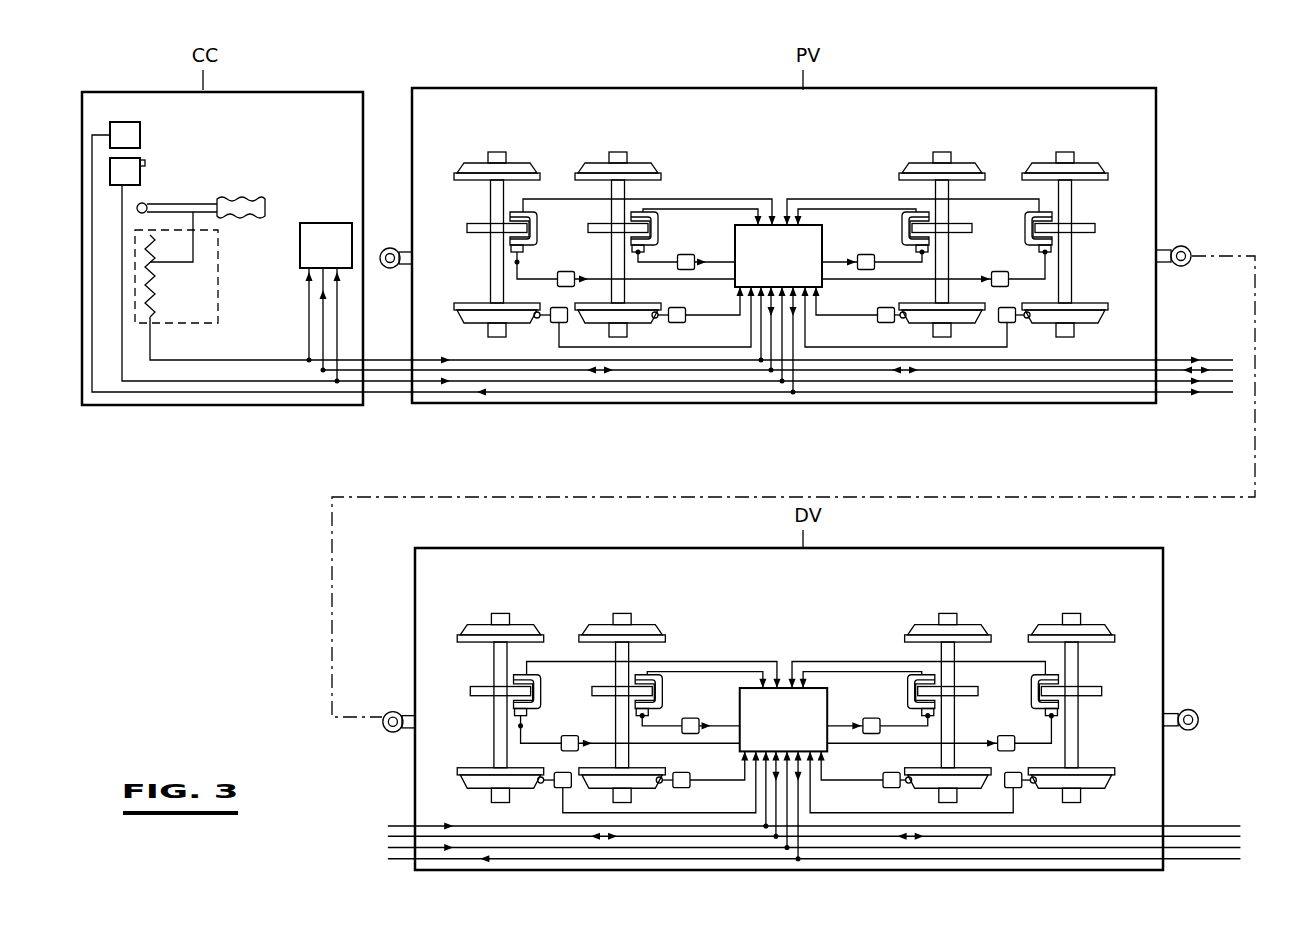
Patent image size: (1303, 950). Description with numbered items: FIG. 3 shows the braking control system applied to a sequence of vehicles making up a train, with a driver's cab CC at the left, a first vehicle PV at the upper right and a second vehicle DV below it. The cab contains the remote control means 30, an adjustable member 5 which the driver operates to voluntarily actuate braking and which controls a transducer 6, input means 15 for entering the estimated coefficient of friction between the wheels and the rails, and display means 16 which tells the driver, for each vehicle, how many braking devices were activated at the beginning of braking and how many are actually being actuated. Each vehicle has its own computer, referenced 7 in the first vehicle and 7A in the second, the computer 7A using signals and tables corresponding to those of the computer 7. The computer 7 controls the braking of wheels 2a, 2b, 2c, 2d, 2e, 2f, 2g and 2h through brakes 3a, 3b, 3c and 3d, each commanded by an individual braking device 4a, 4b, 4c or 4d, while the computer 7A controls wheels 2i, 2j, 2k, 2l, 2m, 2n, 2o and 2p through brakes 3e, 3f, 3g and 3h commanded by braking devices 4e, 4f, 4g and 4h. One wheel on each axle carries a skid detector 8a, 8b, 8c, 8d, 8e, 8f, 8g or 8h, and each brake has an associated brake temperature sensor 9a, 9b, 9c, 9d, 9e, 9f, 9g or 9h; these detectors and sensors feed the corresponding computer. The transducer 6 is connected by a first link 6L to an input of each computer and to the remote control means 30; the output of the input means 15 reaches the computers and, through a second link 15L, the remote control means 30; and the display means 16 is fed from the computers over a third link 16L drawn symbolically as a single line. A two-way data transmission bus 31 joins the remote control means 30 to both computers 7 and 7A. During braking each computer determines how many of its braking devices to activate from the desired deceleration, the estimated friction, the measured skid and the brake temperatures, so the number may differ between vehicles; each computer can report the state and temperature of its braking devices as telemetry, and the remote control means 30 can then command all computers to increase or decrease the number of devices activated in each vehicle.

The wheel 2a is at (468, 165).
The wheel 2b is at (460, 317).
The wheel 2c is at (604, 164).
The wheel 2d is at (637, 323).
The wheel 2e is at (920, 166).
The wheel 2f is at (968, 323).
The wheel 2g is at (1085, 166).
The wheel 2h is at (1097, 318).
The wheel 2i is at (495, 606).
The wheel 2j is at (487, 771).
The wheel 2k is at (622, 606).
The wheel 2l is at (622, 836).
The wheel 2m is at (944, 604).
The wheel 2n is at (948, 836).
The wheel 2o is at (1072, 603).
The wheel 2p is at (1091, 769).
The brake 3a is at (528, 253).
The brake 3b is at (652, 250).
The brake 3c is at (910, 252).
The brake 3d is at (1068, 252).
The brake 3e is at (545, 696).
The brake 3f is at (671, 695).
The brake 3g is at (902, 696).
The brake 3h is at (1081, 701).
The individual braking device 4a is at (556, 274).
The individual braking device 4b is at (692, 256).
The individual braking device 4c is at (857, 263).
The individual braking device 4d is at (992, 278).
The individual braking device 4e is at (629, 731).
The individual braking device 4f is at (690, 714).
The individual braking device 4g is at (878, 712).
The individual braking device 4h is at (940, 728).
The adjustable member 5 is at (246, 197).
The transducer 6 is at (220, 290).
The first link 6L is at (242, 360).
The computer 7 is at (768, 268).
The computer 7A is at (783, 719).
The skid detector 8a is at (553, 326).
The skid detector 8b is at (681, 323).
The skid detector 8c is at (878, 322).
The skid detector 8d is at (1012, 325).
The skid detector 8e is at (639, 785).
The skid detector 8f is at (702, 780).
The skid detector 8g is at (865, 780).
The skid detector 8h is at (929, 785).
The brake temperature sensor 9a is at (513, 215).
The brake temperature sensor 9b is at (638, 213).
The brake temperature sensor 9c is at (920, 213).
The brake temperature sensor 9d is at (1045, 215).
The brake temperature sensor 9e is at (620, 672).
The brake temperature sensor 9f is at (704, 657).
The brake temperature sensor 9g is at (863, 656).
The brake temperature sensor 9h is at (967, 668).
The input means 15 is at (148, 172).
The second link 15L is at (218, 405).
The display means 16 is at (142, 132).
The third link 16L is at (137, 405).
The remote control means 30 is at (320, 232).
The two-way data transmission bus 31 is at (323, 372).